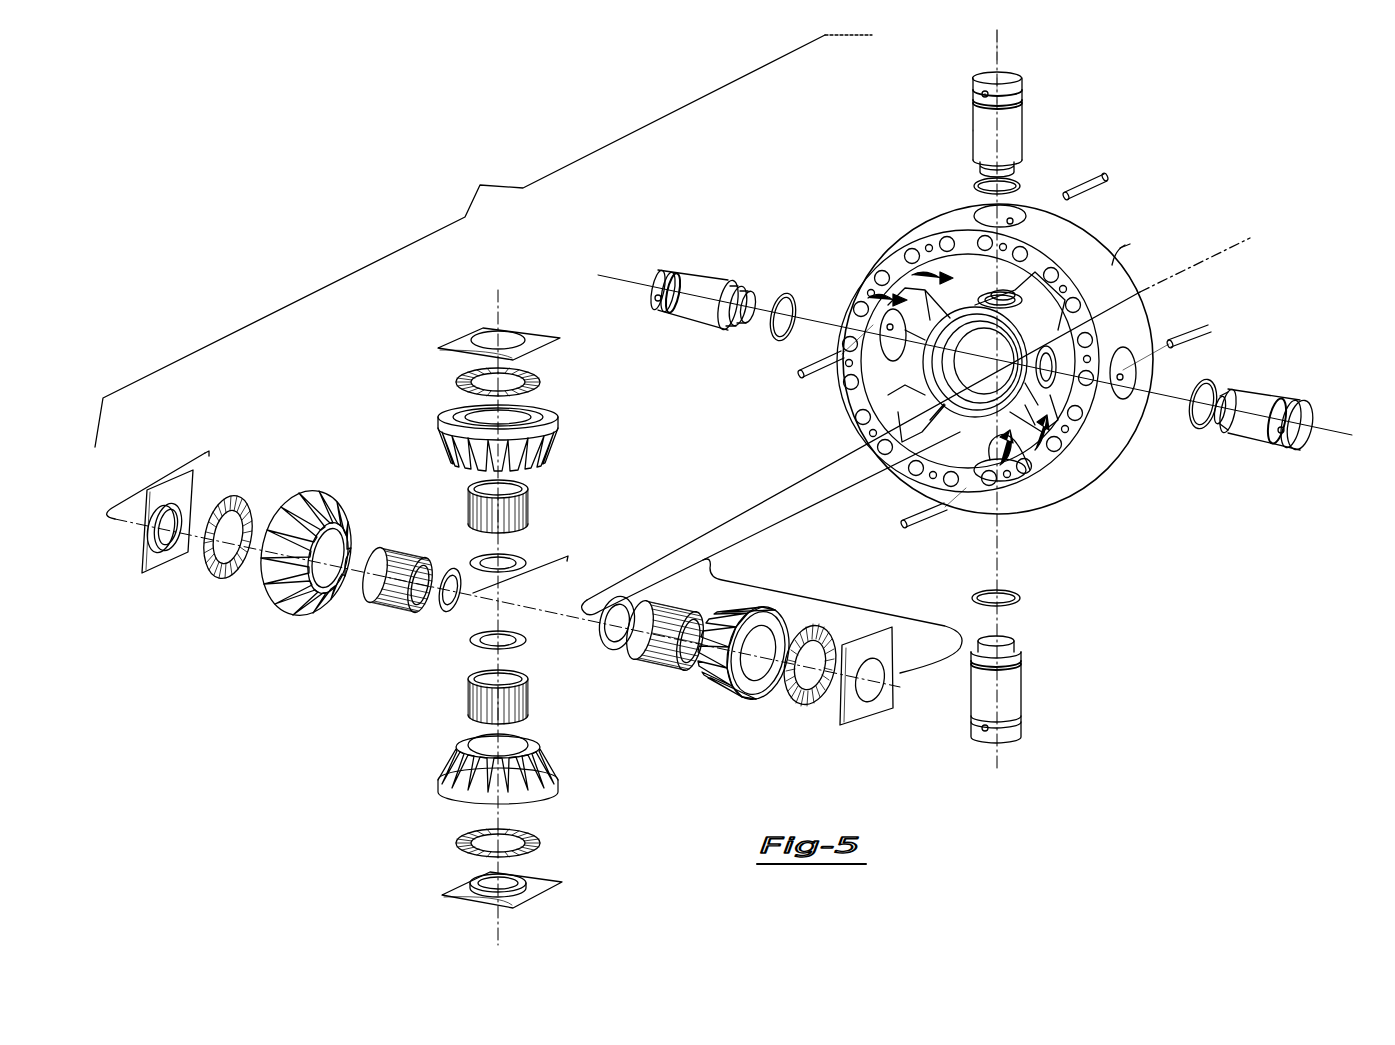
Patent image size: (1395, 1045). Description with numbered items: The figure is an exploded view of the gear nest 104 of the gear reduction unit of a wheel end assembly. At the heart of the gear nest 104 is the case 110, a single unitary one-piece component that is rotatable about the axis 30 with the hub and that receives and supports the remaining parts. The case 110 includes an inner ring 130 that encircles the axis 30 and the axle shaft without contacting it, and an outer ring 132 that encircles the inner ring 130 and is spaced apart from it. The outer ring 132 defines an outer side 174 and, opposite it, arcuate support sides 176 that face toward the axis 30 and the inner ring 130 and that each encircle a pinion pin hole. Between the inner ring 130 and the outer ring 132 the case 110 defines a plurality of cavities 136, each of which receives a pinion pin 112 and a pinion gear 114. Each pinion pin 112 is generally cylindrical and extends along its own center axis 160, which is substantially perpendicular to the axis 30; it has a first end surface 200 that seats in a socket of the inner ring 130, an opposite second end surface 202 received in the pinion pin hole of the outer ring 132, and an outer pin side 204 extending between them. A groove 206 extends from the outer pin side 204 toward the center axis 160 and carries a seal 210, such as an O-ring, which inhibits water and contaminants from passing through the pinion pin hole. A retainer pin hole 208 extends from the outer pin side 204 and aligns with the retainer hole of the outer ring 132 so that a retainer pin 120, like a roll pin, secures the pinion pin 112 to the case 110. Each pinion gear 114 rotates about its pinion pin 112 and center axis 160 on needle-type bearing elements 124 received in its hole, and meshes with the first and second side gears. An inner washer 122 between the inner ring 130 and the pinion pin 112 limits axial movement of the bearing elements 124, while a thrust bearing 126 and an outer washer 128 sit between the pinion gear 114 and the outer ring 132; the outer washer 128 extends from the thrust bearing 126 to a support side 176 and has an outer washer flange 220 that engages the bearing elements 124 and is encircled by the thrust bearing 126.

The axis 30 is at (1222, 270).
The gear nest 104 is at (617, 354).
The case 110 is at (1118, 245).
The pinion pin 112 is at (1022, 118).
The pinion gear 114 is at (437, 420).
The retainer pin 120 is at (1095, 185).
The inner washer 122 is at (600, 628).
The bearing element 124 is at (468, 508).
The thrust bearing 126 is at (458, 378).
The outer washer 128 is at (455, 335).
The inner ring 130 is at (1045, 300).
The outer ring 132 is at (1125, 246).
The cavity 136 is at (912, 265).
The center axis 160 is at (1010, 58).
The outer side 174 is at (1082, 309).
The support side 176 is at (886, 404).
The first end surface 200 is at (1018, 166).
The second end surface 202 is at (990, 78).
The outer pin side 204 is at (973, 150).
The groove 206 is at (975, 102).
The retainer pin hole 208 is at (980, 93).
The seal 210 is at (1015, 184).
The outer washer flange 220 is at (480, 880).